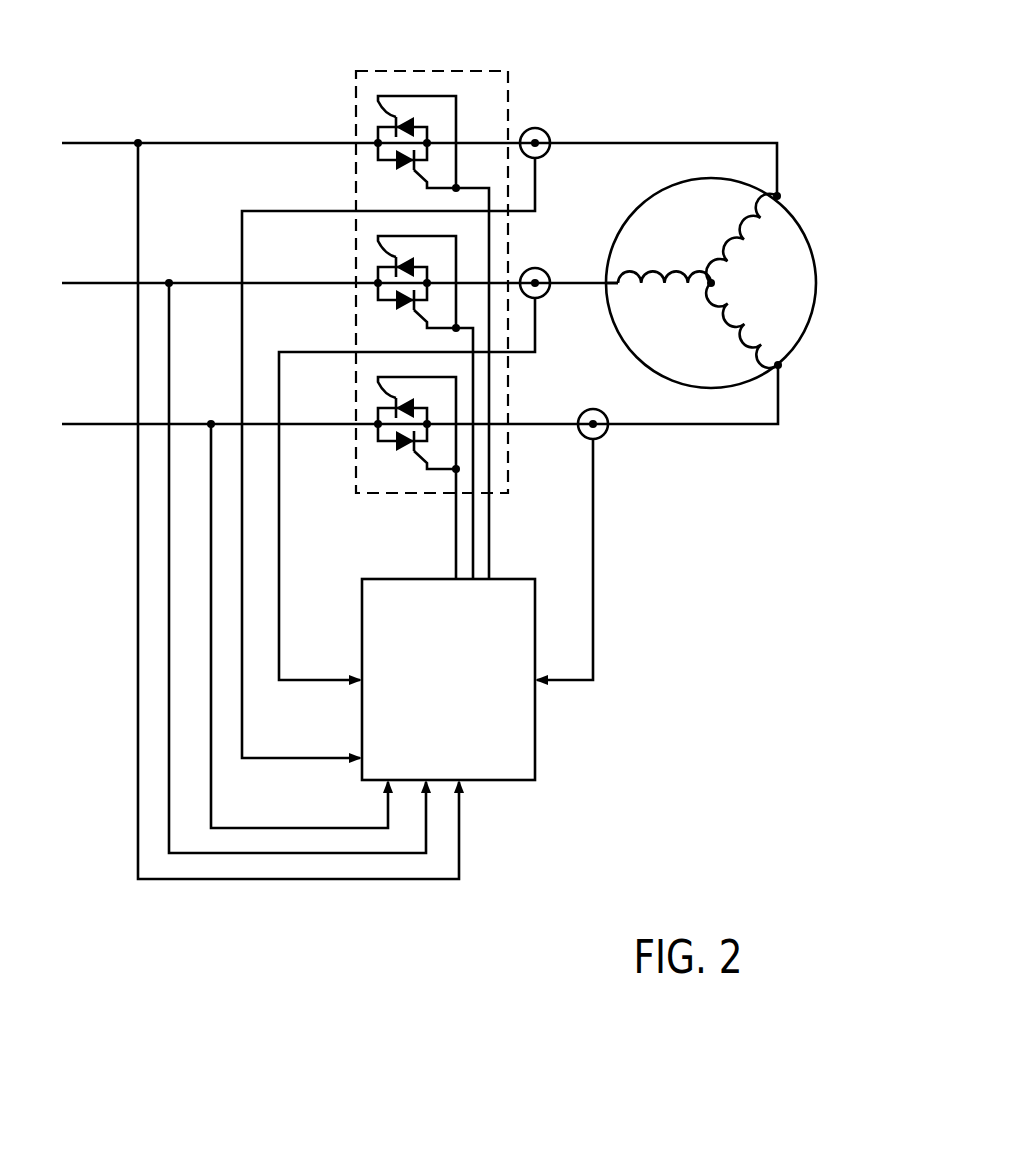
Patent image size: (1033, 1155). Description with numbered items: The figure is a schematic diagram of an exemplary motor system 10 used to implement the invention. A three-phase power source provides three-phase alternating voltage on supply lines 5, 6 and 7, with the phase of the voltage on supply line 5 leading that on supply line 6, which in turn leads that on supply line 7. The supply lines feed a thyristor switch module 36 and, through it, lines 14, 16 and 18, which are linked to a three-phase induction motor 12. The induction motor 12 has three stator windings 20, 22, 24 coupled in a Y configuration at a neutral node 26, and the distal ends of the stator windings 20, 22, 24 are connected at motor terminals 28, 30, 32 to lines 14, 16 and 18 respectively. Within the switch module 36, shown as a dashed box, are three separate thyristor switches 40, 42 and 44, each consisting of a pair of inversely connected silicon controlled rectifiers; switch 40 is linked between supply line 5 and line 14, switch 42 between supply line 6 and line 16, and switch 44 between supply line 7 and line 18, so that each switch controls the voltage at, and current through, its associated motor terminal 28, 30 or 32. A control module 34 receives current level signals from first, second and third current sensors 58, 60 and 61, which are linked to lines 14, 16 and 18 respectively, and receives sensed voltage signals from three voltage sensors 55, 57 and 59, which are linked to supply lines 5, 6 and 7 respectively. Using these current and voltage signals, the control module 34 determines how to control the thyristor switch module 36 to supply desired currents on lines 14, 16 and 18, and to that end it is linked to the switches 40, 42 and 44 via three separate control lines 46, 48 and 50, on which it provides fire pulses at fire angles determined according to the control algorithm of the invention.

The supply line 5 is at (78, 141).
The supply line 6 is at (80, 282).
The supply line 7 is at (80, 423).
The motor system 10 is at (324, 77).
The three phase induction motor 12 is at (842, 220).
The line 14 is at (718, 141).
The line 16 is at (562, 292).
The line 18 is at (728, 427).
The stator winding 20 is at (722, 248).
The stator winding 22 is at (655, 268).
The stator winding 24 is at (755, 335).
The neutral node 26 is at (705, 290).
The motor terminal 28 is at (608, 140).
The motor terminal 30 is at (585, 282).
The motor terminal 32 is at (782, 370).
The control module 34 is at (537, 737).
The thyristor switch module 36 is at (462, 71).
The thyristor switch 40 is at (360, 124).
The thyristor switch 42 is at (362, 256).
The thyristor switch 44 is at (364, 412).
The control line 46 is at (491, 535).
The control line 48 is at (471, 518).
The control line 50 is at (455, 556).
The voltage sensor 55 is at (142, 141).
The voltage sensor 57 is at (170, 282).
The current sensor 58 is at (548, 130).
The voltage sensor 59 is at (212, 423).
The current sensor 60 is at (548, 272).
The current sensor 61 is at (605, 436).